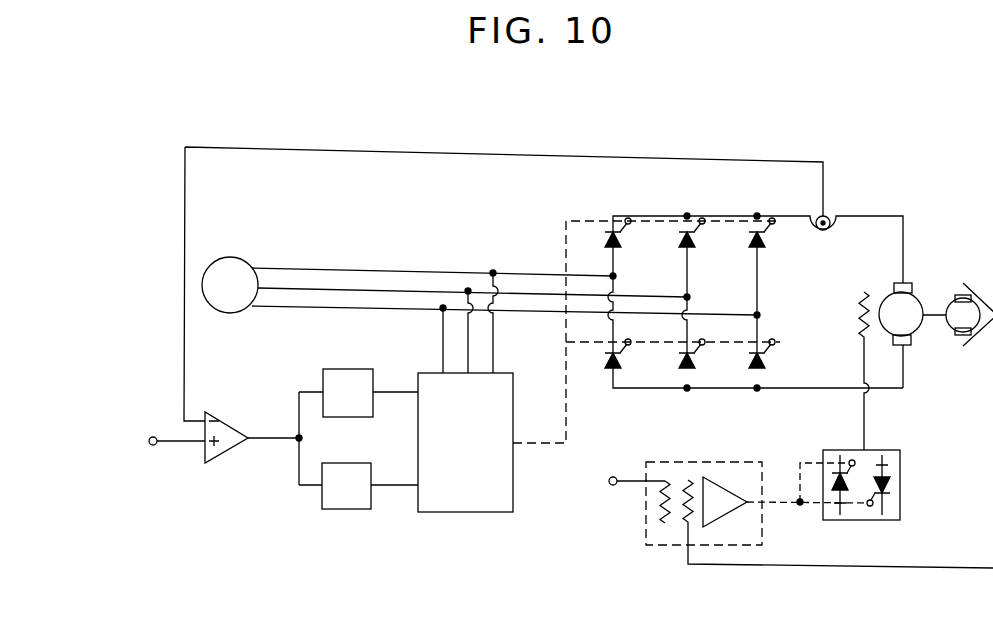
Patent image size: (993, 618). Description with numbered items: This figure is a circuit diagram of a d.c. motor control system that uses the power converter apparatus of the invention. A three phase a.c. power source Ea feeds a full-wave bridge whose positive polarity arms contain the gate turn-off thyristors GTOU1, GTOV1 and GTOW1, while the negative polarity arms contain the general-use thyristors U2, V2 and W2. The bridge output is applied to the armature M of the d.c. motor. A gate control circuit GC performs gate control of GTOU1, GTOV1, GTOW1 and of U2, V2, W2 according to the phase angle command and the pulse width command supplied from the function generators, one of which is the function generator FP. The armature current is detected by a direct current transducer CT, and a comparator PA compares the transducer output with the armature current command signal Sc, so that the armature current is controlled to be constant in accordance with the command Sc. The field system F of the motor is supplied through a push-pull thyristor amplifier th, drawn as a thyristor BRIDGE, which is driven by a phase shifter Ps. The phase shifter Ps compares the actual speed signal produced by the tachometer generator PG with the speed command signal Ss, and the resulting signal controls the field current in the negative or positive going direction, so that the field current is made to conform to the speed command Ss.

The armature current command signal Sc is at (155, 441).
The comparator PA is at (252, 448).
The function generator FP is at (346, 486).
The gate control circuit GC is at (465, 442).
The three phase a.c. power source Ea is at (479, 286).
The gate turn-off thyristor GTOU1 is at (606, 234).
The gate turn-off thyristor GTOV1 is at (680, 234).
The gate turn-off thyristor GTOW1 is at (766, 243).
The thyristor U2 is at (630, 361).
The thyristor V2 is at (703, 361).
The thyristor W2 is at (777, 361).
The direct current transducer CT is at (839, 210).
The field system F is at (851, 371).
The armature M is at (912, 335).
The tachometer generator PG is at (969, 314).
The speed command signal Ss is at (621, 481).
The phase shifter Ps is at (739, 462).
The thyristor bridge BRIDGE is at (877, 500).
The push-pull thyristor amplifier th is at (900, 490).